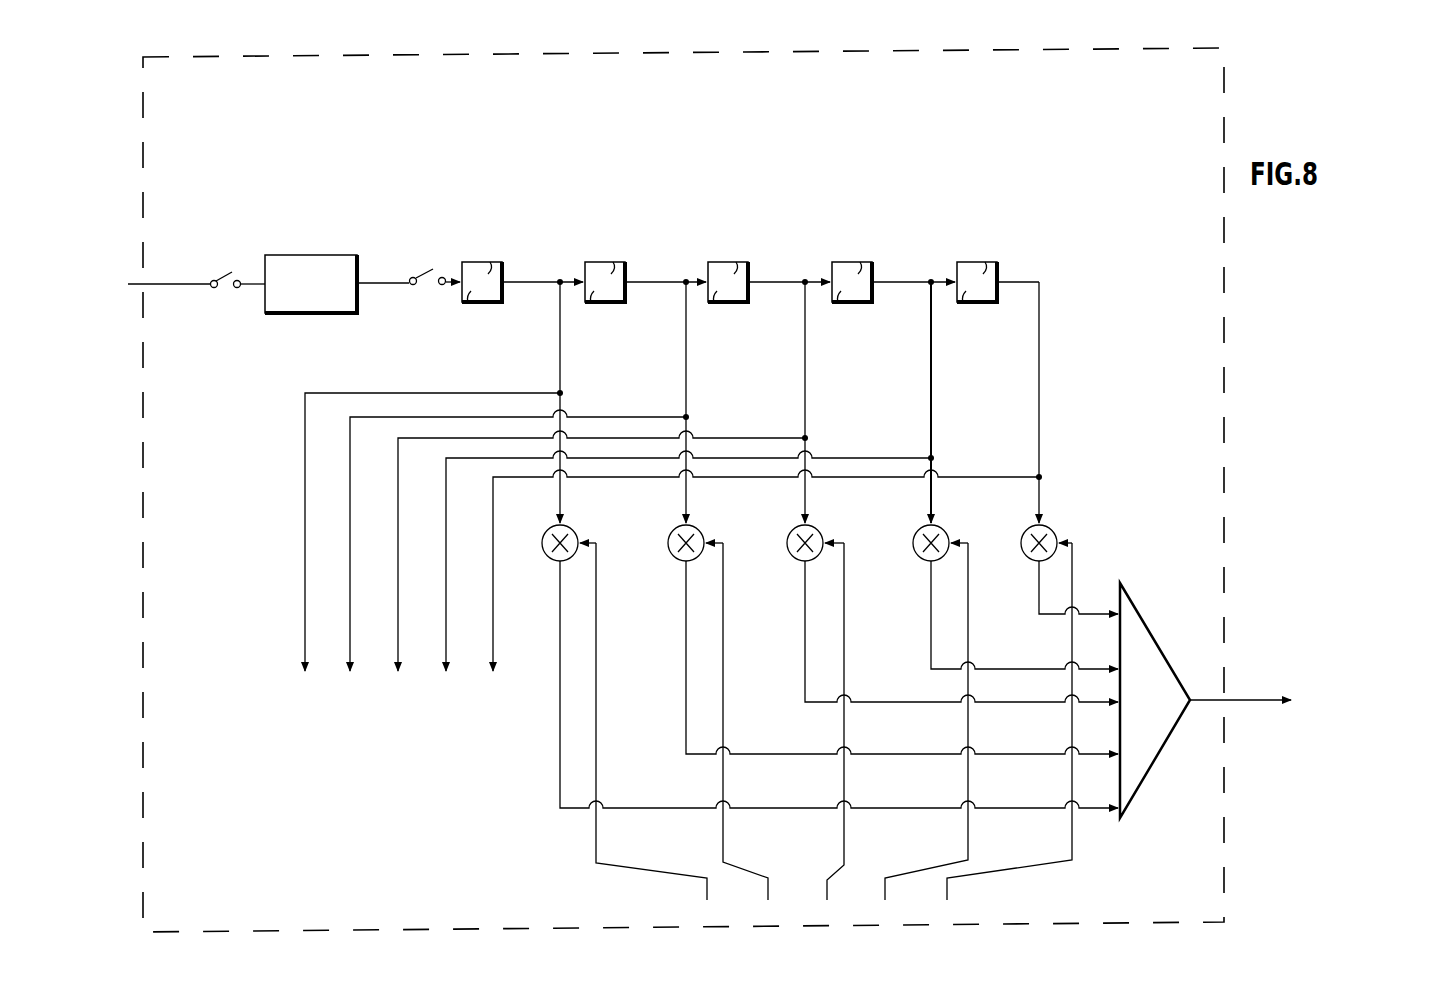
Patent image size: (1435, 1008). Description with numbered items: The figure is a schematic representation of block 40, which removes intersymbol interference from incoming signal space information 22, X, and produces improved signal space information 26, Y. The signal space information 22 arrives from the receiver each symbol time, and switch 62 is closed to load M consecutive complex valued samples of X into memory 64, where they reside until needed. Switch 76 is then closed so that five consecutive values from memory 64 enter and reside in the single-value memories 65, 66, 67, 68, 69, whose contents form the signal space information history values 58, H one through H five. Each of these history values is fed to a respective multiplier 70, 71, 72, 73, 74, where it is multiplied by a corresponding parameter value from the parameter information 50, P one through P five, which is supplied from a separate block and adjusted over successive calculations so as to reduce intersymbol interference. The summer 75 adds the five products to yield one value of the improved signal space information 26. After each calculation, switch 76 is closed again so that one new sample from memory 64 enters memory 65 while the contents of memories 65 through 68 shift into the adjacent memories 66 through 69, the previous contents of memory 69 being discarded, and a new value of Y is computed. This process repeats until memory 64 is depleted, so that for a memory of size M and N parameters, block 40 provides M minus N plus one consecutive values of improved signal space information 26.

The signal space information 22 is at (142, 262).
The switch 62 is at (211, 288).
The memory 64 is at (320, 264).
The switch 76 is at (437, 279).
The memory 65 is at (470, 299).
The memory 66 is at (593, 299).
The memory 67 is at (716, 299).
The memory 68 is at (840, 299).
The memory 69 is at (965, 299).
The multiplier 70 is at (569, 532).
The multiplier 71 is at (697, 532).
The multiplier 72 is at (814, 532).
The multiplier 73 is at (944, 532).
The multiplier 74 is at (1054, 532).
The summer 75 is at (1149, 758).
The improved signal space information 26 is at (1241, 701).
The signal space information history values 58 is at (258, 703).
The parameter information 50 is at (659, 922).
The block 40 is at (414, 914).